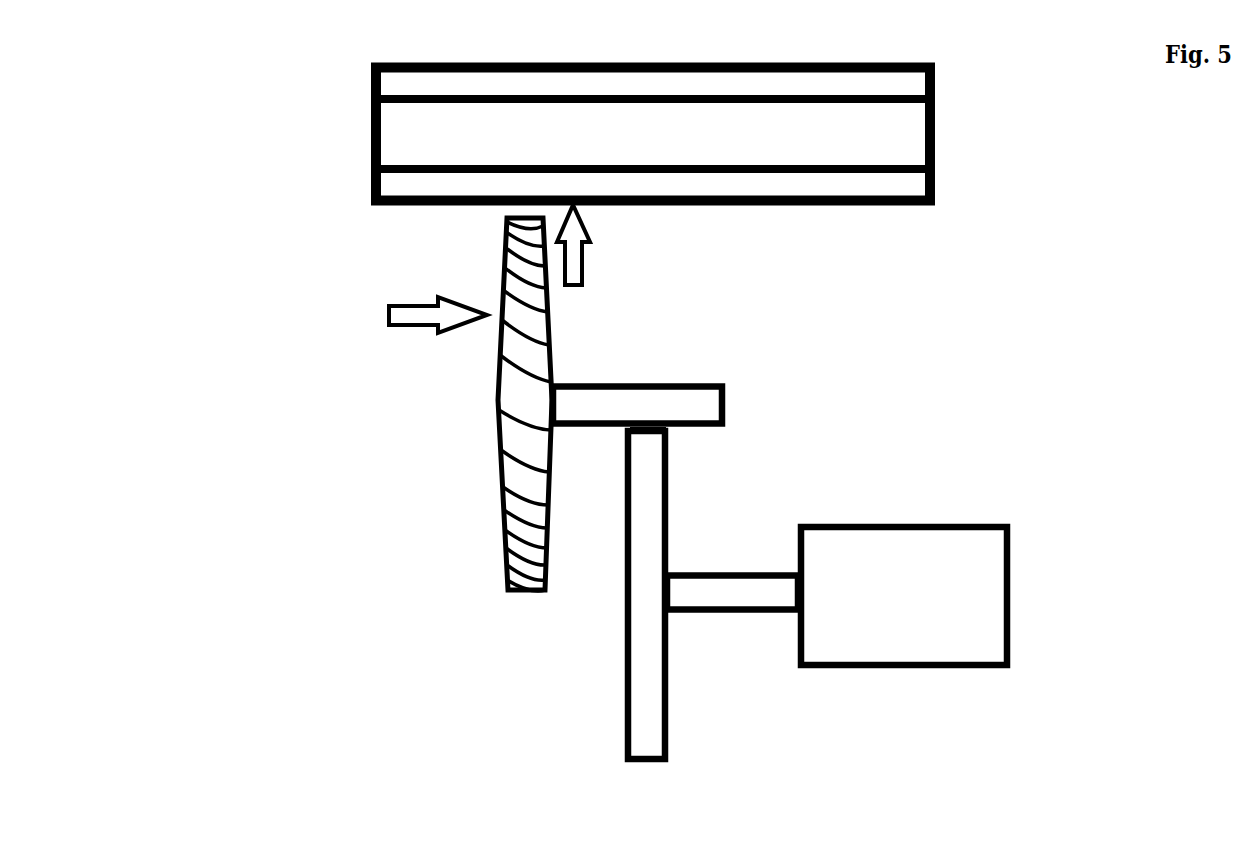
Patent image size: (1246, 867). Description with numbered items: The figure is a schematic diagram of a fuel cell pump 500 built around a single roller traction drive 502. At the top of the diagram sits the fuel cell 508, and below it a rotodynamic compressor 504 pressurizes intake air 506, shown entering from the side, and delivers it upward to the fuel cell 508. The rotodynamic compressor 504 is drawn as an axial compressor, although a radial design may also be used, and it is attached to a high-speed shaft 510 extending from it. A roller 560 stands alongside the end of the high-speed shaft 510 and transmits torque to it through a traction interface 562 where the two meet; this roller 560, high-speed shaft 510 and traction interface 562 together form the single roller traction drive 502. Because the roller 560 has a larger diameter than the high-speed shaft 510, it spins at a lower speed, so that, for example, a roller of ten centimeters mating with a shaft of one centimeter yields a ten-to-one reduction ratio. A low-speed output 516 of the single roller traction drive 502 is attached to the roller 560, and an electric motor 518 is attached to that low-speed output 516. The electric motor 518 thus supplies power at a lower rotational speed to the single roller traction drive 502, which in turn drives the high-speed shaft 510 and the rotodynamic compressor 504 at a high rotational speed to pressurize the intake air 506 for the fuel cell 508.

The fuel cell pump 500 is at (317, 137).
The single roller traction drive 502 is at (383, 478).
The rotodynamic compressor 504 is at (520, 477).
The intake air 506 is at (433, 315).
The fuel cell 508 is at (607, 142).
The high-speed shaft 510 is at (597, 400).
The low-speed output 516 is at (710, 590).
The electric motor 518 is at (875, 637).
The roller 560 is at (643, 648).
The traction interface 562 is at (673, 428).